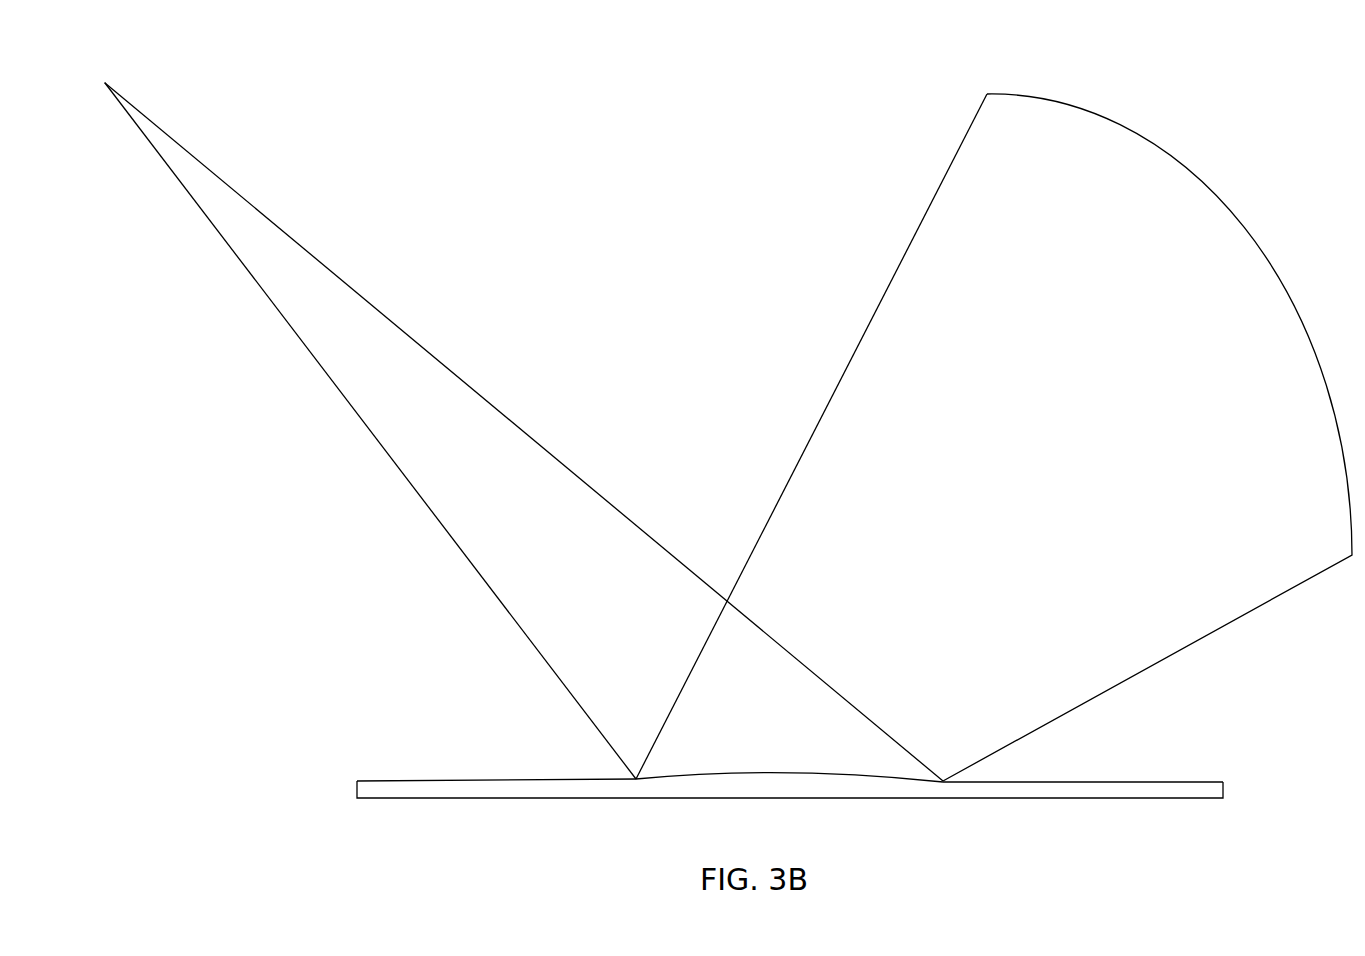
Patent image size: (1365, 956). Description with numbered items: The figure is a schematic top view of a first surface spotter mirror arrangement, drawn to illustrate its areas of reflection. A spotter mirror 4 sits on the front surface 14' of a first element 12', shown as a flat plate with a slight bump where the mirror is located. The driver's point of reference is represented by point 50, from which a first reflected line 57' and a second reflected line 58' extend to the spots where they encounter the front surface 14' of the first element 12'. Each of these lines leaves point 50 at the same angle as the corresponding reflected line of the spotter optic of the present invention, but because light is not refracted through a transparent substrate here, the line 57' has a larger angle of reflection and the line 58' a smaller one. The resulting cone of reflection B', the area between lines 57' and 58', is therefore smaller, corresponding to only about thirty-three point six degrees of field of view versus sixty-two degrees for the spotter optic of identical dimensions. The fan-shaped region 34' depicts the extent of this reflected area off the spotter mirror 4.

The point 50 is at (106, 82).
The first reflected line 57' is at (370, 431).
The second reflected line 58' is at (524, 432).
The cone of reflection B' is at (811, 436).
The reflected light fan / detector region 34' is at (1147, 437).
The first element 12' is at (789, 732).
The front surface 14' is at (790, 724).
The spotter mirror 4 is at (784, 757).